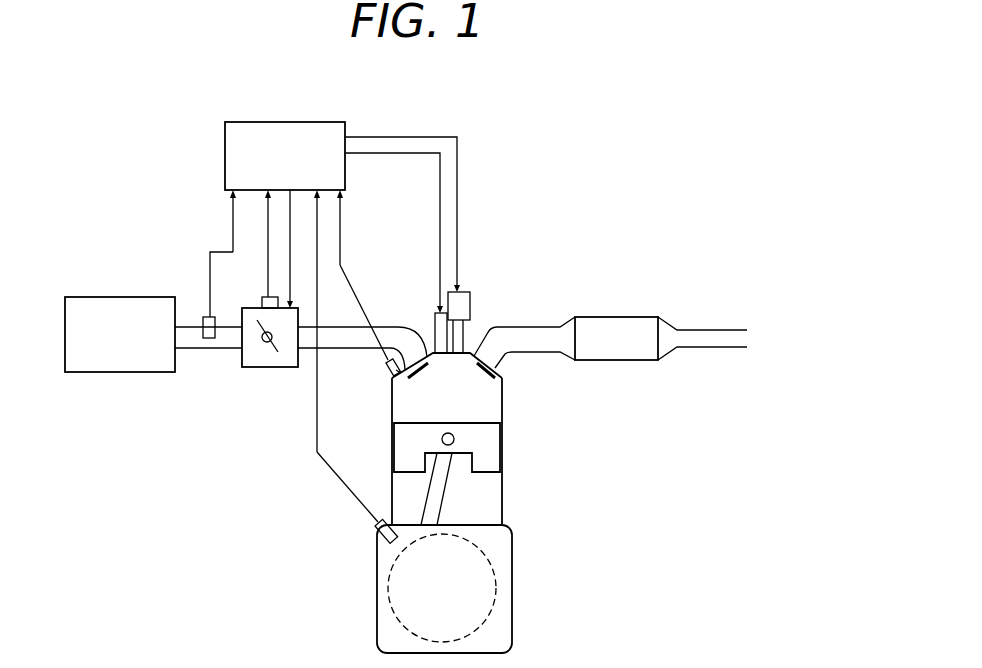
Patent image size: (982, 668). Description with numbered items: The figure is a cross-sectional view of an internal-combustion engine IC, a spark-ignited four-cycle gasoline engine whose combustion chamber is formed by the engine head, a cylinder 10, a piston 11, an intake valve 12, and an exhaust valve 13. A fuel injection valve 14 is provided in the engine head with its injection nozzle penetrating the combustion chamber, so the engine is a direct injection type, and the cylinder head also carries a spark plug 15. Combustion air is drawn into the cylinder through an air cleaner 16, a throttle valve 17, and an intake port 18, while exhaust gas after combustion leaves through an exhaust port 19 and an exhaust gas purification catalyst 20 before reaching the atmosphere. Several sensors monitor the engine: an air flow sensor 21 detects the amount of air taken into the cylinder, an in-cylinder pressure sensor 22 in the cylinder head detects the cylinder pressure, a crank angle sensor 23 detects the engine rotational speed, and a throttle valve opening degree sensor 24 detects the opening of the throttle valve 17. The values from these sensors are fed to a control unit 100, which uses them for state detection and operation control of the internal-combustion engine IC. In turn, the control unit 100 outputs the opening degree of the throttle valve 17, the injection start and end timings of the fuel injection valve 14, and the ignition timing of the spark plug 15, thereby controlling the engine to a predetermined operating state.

The control unit 100 is at (302, 122).
The air cleaner 16 is at (110, 297).
The air flow sensor 21 is at (207, 317).
The throttle valve opening degree sensor 24 is at (262, 300).
The throttle valve 17 is at (258, 368).
The intake port 18 is at (342, 349).
The in-cylinder pressure sensor 22 is at (390, 380).
The cylinder 10 is at (503, 398).
The intake valve 12 is at (392, 418).
The piston 11 is at (497, 443).
The crank angle sensor 23 is at (377, 524).
The fuel injection valve 14 is at (468, 294).
The spark plug 15 is at (433, 325).
The exhaust valve 13 is at (497, 350).
The exhaust port 19 is at (553, 328).
The exhaust gas purification catalyst 20 is at (627, 317).
The internal-combustion engine IC is at (534, 195).